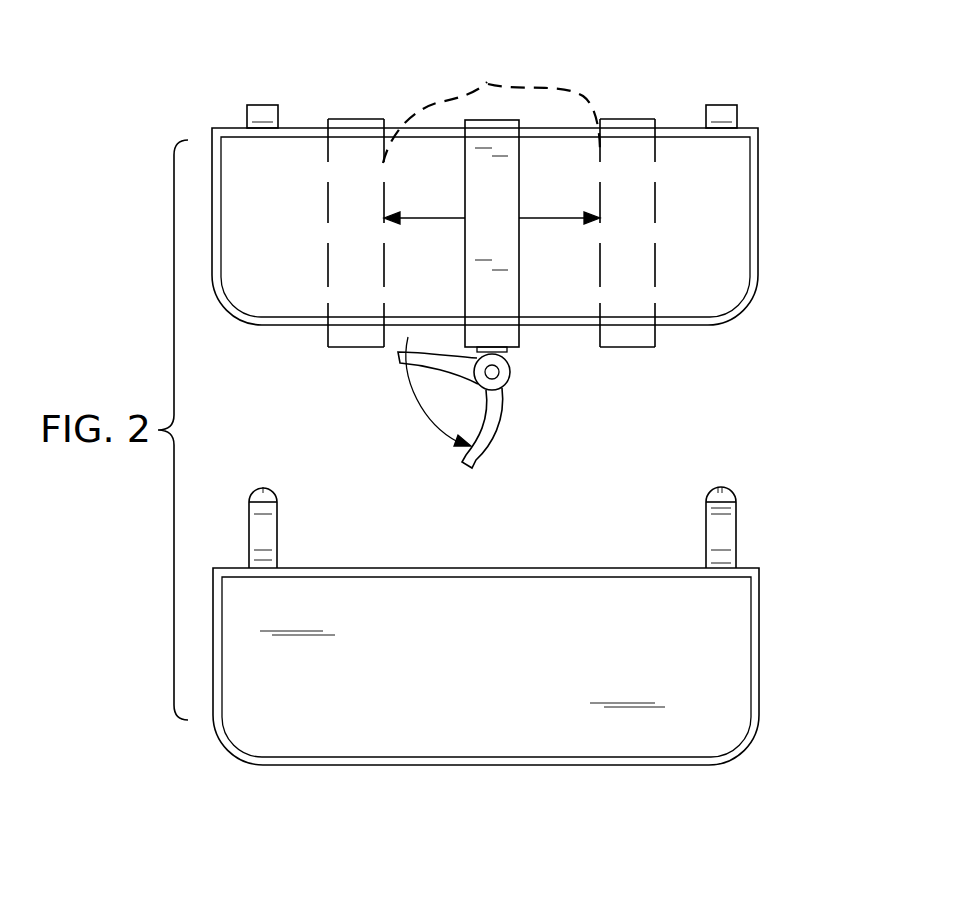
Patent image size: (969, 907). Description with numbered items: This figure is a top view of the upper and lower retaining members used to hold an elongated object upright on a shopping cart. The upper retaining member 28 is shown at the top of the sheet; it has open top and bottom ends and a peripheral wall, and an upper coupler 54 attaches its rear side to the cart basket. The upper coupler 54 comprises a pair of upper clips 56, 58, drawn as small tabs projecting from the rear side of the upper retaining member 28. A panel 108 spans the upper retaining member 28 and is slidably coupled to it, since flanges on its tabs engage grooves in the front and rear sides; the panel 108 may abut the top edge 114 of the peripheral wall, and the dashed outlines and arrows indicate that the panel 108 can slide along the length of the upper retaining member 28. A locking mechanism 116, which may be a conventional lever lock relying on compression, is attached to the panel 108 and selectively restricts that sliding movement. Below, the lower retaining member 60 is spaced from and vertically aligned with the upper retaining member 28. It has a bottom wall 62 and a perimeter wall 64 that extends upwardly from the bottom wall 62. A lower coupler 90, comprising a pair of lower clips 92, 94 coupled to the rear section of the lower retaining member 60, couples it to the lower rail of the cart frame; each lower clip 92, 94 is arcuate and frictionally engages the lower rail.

The upper retaining member 28 is at (765, 315).
The upper coupler 54 is at (222, 105).
The upper clip 56 is at (263, 110).
The upper clip 58 is at (720, 108).
The panel 108 is at (497, 138).
The top edge 114 is at (752, 207).
The locking mechanism 116 is at (414, 370).
The lower retaining member 60 is at (776, 617).
The bottom wall 62 is at (463, 602).
The perimeter wall 64 is at (760, 692).
The lower coupler 90 is at (290, 495).
The lower clip 92 is at (270, 538).
The lower clip 94 is at (730, 540).